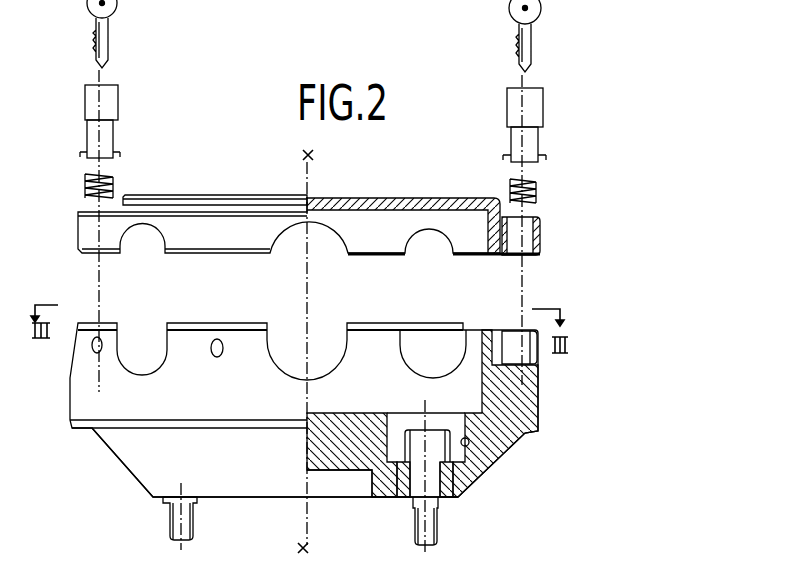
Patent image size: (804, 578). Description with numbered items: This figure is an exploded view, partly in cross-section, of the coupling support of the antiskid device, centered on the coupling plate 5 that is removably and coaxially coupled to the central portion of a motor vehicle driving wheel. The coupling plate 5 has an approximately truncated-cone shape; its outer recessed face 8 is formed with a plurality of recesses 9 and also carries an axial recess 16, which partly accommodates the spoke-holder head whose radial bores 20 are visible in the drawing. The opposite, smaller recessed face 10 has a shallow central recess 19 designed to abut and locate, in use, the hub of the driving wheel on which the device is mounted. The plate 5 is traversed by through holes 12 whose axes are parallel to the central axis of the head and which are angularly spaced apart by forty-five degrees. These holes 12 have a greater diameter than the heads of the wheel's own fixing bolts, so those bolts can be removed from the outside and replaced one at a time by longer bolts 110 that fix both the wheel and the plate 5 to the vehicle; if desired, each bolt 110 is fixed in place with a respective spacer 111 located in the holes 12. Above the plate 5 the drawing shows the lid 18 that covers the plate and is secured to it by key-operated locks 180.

The coupling plate 5 is at (68, 400).
The outer recessed face 8 is at (224, 324).
The recesses 9 is at (421, 345).
The smaller recessed face 10 is at (249, 498).
The through holes 12 is at (467, 449).
The axial recess 16 is at (333, 412).
The lid 18 is at (188, 198).
The shallow central recess 19 is at (367, 488).
The radial bores 20 is at (141, 244).
The longer bolts 110 is at (166, 501).
The spacer 111 is at (458, 500).
The key-operated locks 180 is at (113, 107).